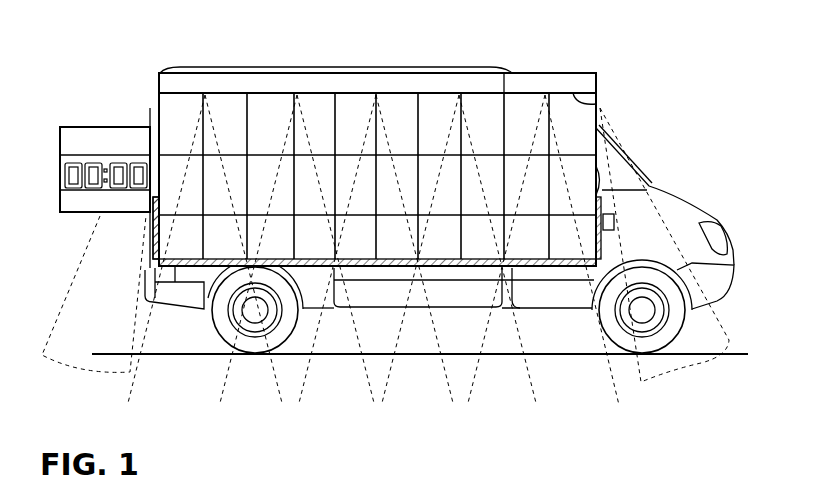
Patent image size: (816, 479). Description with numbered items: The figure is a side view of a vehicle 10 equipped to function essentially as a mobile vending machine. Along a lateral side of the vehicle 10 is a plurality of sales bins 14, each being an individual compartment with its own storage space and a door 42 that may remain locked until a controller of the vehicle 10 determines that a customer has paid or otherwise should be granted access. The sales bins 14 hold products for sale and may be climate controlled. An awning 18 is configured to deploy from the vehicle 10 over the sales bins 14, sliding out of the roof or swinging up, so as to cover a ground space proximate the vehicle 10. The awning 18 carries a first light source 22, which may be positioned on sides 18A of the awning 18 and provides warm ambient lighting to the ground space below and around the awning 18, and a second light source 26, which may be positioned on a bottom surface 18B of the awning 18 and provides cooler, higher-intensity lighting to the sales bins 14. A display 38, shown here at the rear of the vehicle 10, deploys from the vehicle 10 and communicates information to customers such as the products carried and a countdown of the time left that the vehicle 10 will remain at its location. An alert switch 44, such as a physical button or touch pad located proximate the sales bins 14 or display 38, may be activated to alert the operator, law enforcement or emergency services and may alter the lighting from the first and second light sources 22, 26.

The vehicle 10 is at (684, 138).
The sales bins 14 is at (226, 120).
The awning 18 is at (428, 216).
The sides of the awning 18A is at (527, 86).
The bottom surface of the awning 18B is at (596, 106).
The first light source 22 is at (270, 84).
The second light source 26 is at (172, 263).
The display 38 is at (100, 126).
The door 42 is at (180, 238).
The alert switch 44 is at (614, 228).